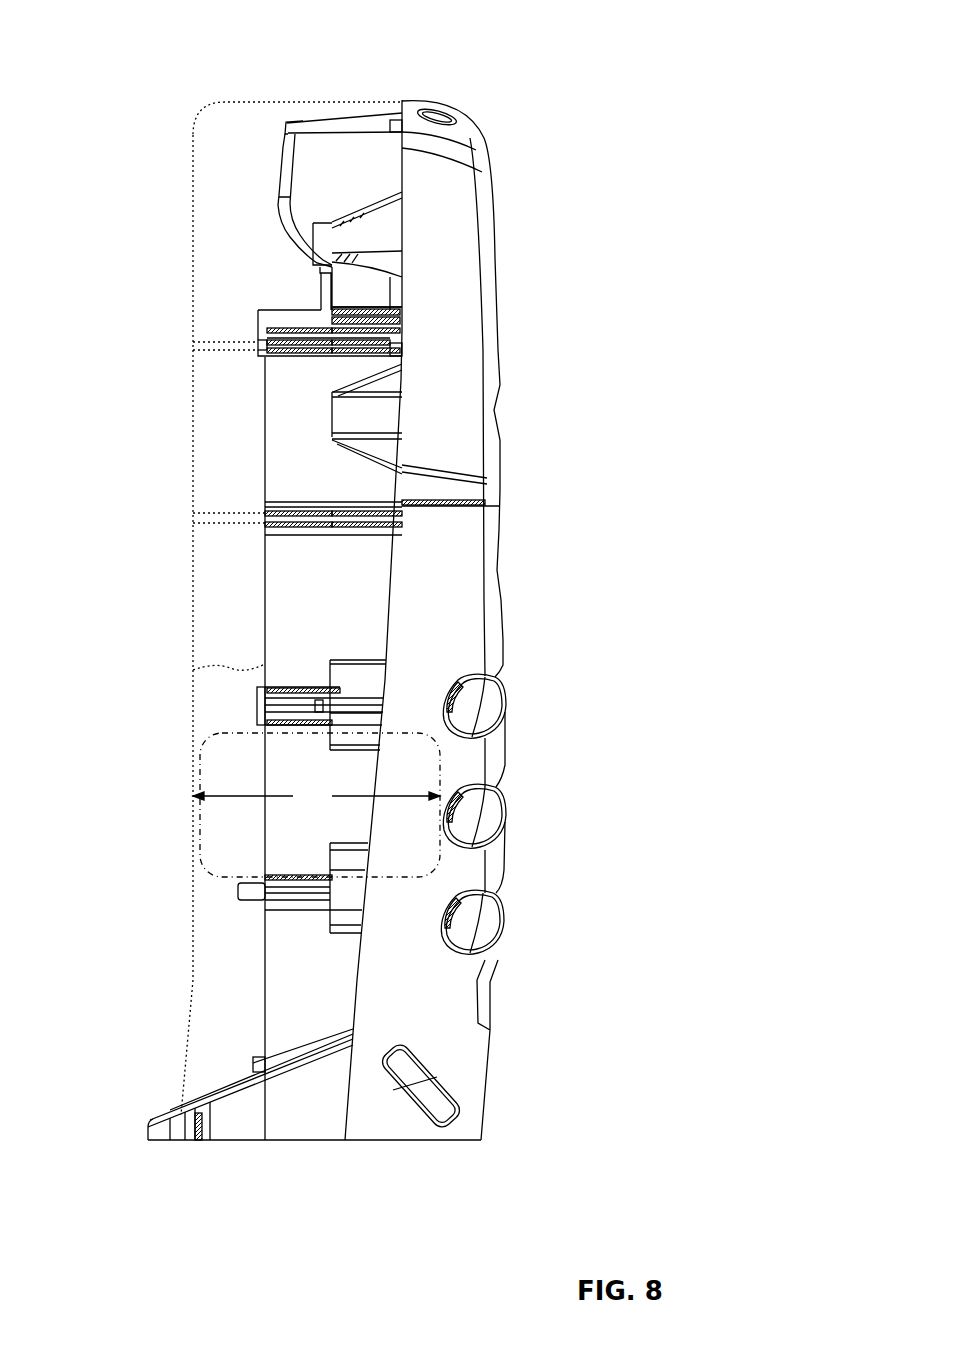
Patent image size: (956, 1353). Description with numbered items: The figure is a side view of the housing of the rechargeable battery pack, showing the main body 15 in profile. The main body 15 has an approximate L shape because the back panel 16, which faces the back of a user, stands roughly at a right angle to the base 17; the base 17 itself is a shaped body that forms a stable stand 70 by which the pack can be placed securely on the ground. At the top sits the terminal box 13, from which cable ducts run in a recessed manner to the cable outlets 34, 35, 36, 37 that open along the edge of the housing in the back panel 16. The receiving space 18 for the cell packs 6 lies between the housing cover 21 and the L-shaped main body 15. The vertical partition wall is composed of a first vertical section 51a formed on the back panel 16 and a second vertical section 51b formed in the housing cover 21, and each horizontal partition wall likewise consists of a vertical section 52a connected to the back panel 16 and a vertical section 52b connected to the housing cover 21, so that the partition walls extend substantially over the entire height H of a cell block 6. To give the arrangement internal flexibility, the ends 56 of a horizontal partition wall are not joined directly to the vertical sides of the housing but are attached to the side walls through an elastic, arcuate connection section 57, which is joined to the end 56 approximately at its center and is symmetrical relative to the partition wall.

The cell pack 6 is at (193, 727).
The terminal box 13 is at (352, 160).
The main body 15 is at (453, 1133).
The back panel 16 is at (493, 213).
The base 17 is at (250, 1080).
The receiving space 18 is at (249, 236).
The housing cover 21 is at (193, 228).
The cable outlet 34 is at (445, 108).
The cable outlet 35 is at (463, 722).
The cable outlet 36 is at (515, 816).
The cable outlet 37 is at (514, 922).
The first vertical section 51a is at (322, 468).
The second vertical section 51b is at (222, 443).
The vertical section 52a is at (365, 333).
The vertical section 52b is at (200, 340).
The end of partition wall 56 is at (353, 670).
The connection section 57 is at (337, 712).
The stand 70 is at (283, 1120).